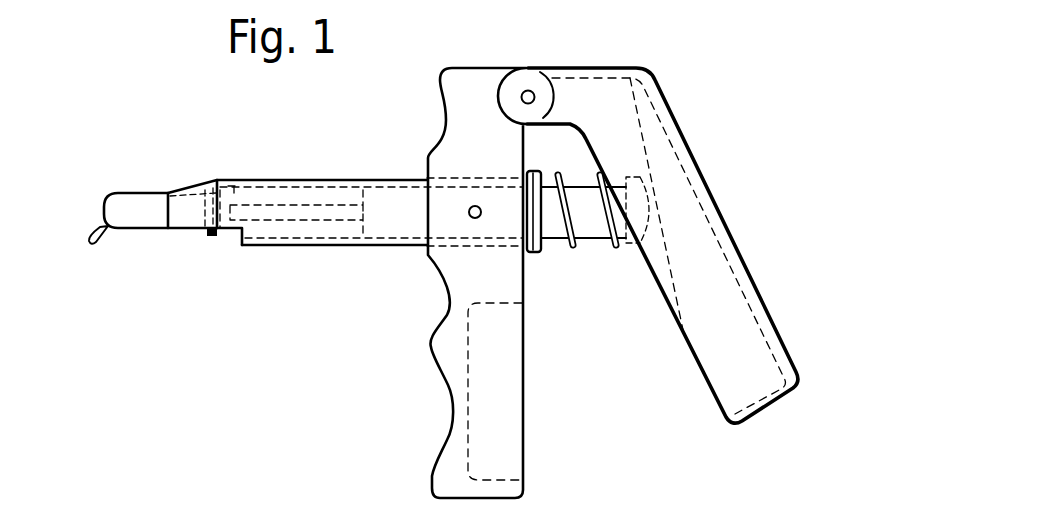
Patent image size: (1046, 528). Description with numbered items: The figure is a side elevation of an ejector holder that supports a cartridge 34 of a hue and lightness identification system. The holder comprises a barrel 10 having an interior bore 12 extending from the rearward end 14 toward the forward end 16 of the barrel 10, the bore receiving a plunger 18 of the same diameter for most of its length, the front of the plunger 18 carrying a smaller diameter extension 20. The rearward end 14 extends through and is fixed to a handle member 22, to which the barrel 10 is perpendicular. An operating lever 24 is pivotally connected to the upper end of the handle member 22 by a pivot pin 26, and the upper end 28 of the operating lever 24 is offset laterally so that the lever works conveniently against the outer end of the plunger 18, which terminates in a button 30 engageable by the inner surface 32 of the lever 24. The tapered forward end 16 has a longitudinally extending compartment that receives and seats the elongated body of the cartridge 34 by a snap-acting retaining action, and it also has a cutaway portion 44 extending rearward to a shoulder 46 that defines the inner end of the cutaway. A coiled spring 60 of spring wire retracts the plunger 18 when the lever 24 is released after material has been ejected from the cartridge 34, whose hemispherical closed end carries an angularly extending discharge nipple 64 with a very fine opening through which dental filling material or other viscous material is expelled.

The barrel 10 is at (381, 179).
The interior bore 12 is at (313, 196).
The rearward end 14 is at (531, 255).
The forward end 16 is at (196, 178).
The plunger 18 is at (587, 221).
The smaller diameter extension 20 is at (272, 212).
The handle member 22 is at (430, 347).
The operating lever 24 is at (805, 387).
The pivot pin 26 is at (524, 88).
The upper end of operating lever 28 is at (614, 65).
The button 30 is at (650, 208).
The inner surface 32 is at (672, 273).
The cartridge 34 is at (131, 205).
The cutaway portion 44 is at (173, 229).
The shoulder 46 is at (240, 247).
The coiled spring 60 is at (553, 145).
The discharge nipple 64 is at (99, 223).